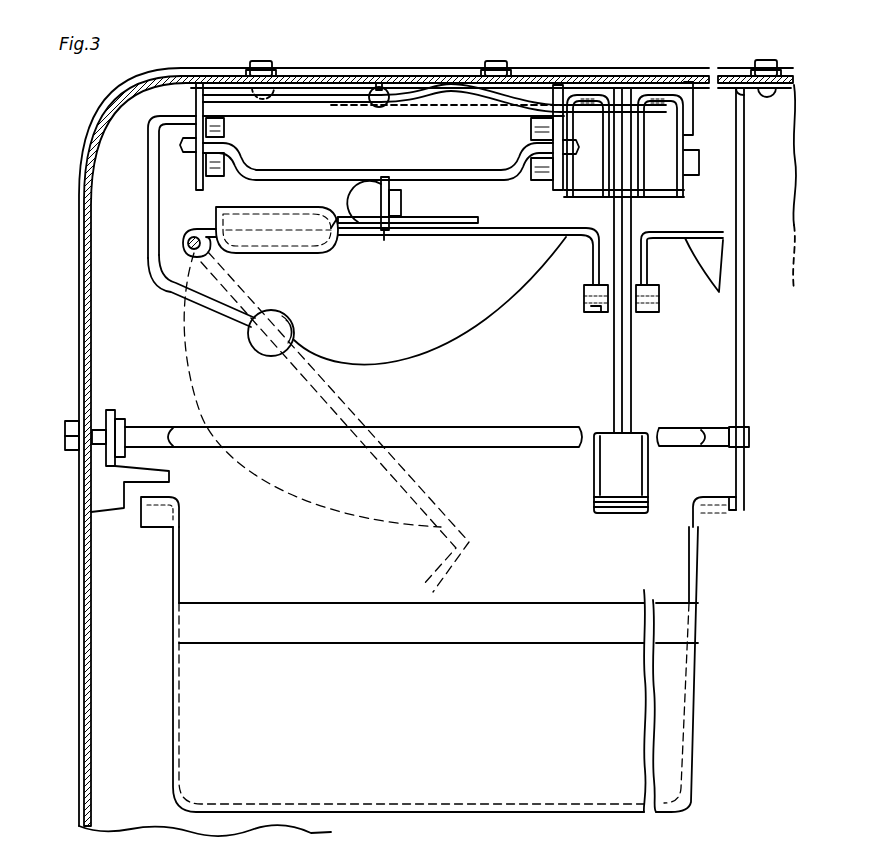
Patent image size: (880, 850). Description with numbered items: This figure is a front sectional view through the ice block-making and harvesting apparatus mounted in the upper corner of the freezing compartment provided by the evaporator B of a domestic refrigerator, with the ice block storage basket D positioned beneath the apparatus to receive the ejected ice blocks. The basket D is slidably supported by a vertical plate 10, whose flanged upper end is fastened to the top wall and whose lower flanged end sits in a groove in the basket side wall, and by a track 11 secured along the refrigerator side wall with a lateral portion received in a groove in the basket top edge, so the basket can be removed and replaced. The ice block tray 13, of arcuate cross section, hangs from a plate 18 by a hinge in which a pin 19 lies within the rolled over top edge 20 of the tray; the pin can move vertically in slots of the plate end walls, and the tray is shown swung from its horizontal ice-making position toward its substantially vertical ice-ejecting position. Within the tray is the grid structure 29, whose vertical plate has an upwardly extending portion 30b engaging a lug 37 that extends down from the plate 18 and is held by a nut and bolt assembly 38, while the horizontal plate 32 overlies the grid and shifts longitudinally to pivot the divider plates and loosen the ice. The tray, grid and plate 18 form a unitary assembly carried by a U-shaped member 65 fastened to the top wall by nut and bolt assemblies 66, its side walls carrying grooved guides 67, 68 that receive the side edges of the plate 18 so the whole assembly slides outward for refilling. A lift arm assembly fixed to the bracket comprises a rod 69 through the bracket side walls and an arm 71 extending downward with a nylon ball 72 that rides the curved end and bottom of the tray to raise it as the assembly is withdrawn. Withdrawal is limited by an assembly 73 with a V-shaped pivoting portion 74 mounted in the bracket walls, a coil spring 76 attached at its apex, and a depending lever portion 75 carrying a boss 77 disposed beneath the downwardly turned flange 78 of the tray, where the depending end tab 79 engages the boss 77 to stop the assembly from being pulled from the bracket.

The evaporator B is at (77, 674).
The ice block storage basket D is at (441, 718).
The vertical plate 10 is at (744, 357).
The track 11 is at (104, 476).
The ice block tray 13 is at (466, 338).
The plate 18 is at (326, 173).
The pin 19 is at (187, 256).
The rolled over top edge 20 is at (190, 235).
The grid structure 29 is at (452, 215).
The upwardly extending portion 30b is at (385, 215).
The horizontal plate 32 is at (478, 221).
The lug 37 is at (385, 232).
The nut and bolt assembly 38 is at (401, 204).
The U-shaped member 65 is at (193, 180).
The nut and bolt assemblies 66 is at (260, 60).
The slide or guide 67 is at (224, 129).
The slide or guide 68 is at (529, 129).
The rod 69 is at (344, 117).
The arm 71 is at (174, 295).
The nylon ball 72 is at (263, 352).
The assembly 73 is at (606, 383).
The pivoting portion 74 is at (406, 97).
The lever portion 75 is at (614, 350).
The coil spring 76 is at (372, 90).
The button or boss 77 is at (583, 300).
The downwardly turned flange 78 is at (590, 263).
The depending end tab 79 is at (600, 316).